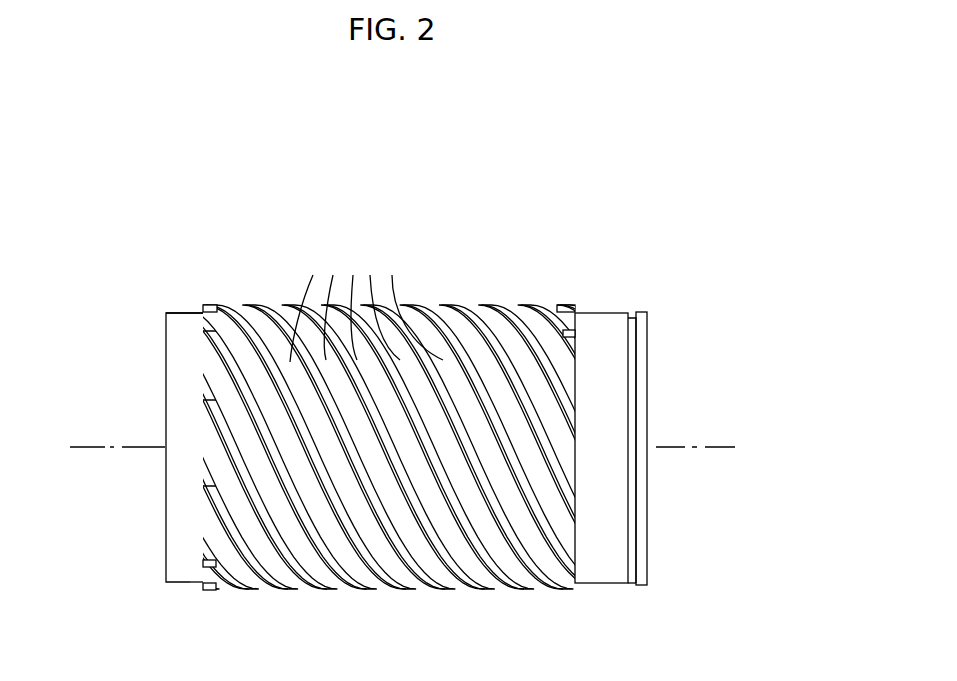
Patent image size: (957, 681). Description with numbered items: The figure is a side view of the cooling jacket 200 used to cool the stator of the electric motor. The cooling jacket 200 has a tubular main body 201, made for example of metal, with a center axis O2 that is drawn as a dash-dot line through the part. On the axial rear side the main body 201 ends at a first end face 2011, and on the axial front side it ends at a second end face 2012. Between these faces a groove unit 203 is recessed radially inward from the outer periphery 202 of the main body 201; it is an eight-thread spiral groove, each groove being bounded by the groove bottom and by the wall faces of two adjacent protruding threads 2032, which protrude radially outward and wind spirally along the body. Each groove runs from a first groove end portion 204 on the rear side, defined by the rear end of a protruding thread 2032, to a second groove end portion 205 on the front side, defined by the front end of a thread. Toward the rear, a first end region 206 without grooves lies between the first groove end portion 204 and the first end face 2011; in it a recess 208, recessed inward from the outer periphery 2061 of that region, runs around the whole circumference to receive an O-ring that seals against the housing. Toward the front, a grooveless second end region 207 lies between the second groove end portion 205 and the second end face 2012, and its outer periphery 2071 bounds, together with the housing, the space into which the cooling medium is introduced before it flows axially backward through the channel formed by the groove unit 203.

The cooling jacket 200 is at (650, 146).
The main body 201 is at (452, 285).
The first end face 2011 is at (648, 342).
The second end face 2012 is at (167, 358).
The outer periphery 202 is at (253, 308).
The groove unit 203 is at (413, 260).
The protruding thread 2032 is at (558, 303).
The first groove end portion 204 is at (571, 302).
The second groove end portion 205 is at (190, 585).
The first end region 206 is at (647, 594).
The outer periphery of first end region 2061 is at (596, 312).
The second end region 207 is at (203, 594).
The outer periphery of second end region 2071 is at (178, 313).
The recess 208 is at (639, 311).
The center axis O2 is at (83, 447).